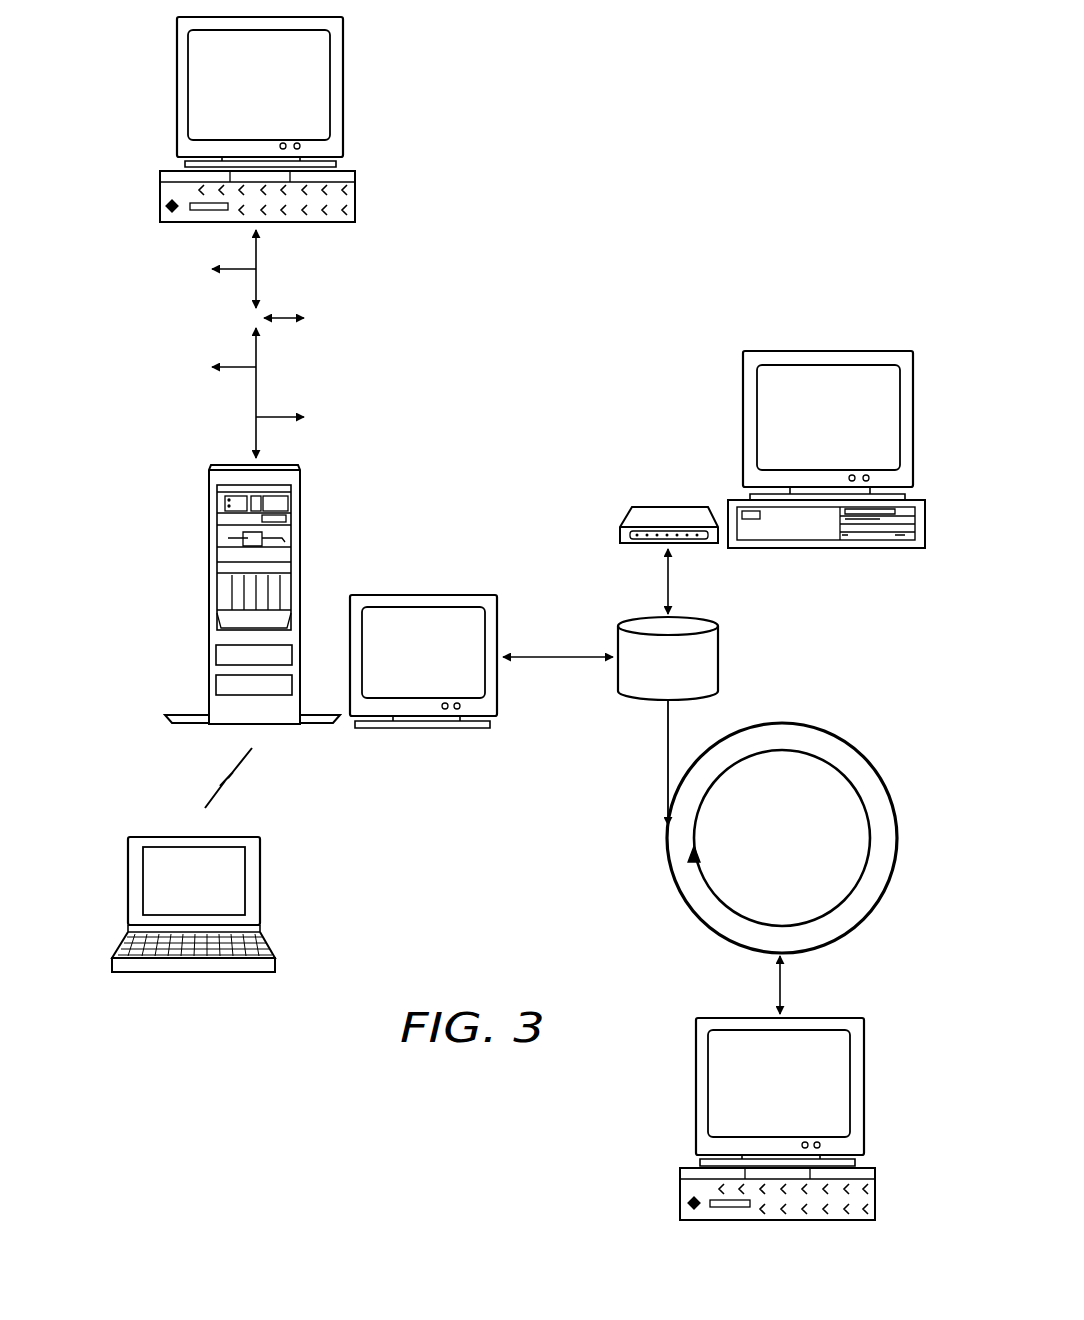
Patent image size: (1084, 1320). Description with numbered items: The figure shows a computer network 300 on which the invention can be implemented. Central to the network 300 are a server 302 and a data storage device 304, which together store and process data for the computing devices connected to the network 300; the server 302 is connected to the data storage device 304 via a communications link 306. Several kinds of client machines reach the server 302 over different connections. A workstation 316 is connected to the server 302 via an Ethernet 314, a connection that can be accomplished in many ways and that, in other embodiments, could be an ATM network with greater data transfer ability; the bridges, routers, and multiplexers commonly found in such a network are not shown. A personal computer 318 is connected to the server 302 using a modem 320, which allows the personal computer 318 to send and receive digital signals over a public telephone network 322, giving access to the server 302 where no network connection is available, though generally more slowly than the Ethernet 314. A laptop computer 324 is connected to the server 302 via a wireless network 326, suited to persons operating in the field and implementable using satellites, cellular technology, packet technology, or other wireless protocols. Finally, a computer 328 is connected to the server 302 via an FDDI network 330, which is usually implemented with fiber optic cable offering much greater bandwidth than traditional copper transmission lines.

The network 300 is at (593, 208).
The server 302 is at (424, 595).
The data storage device 304 is at (720, 668).
The communications link 306 is at (557, 655).
The Ethernet 314 is at (256, 392).
The workstation 316 is at (177, 90).
The personal computer 318 is at (830, 351).
The modem 320 is at (620, 531).
The public telephone network 322 is at (670, 580).
The laptop computer 324 is at (128, 882).
The wireless network 326 is at (214, 792).
The computer 328 is at (866, 1090).
The FDDI network 330 is at (862, 757).